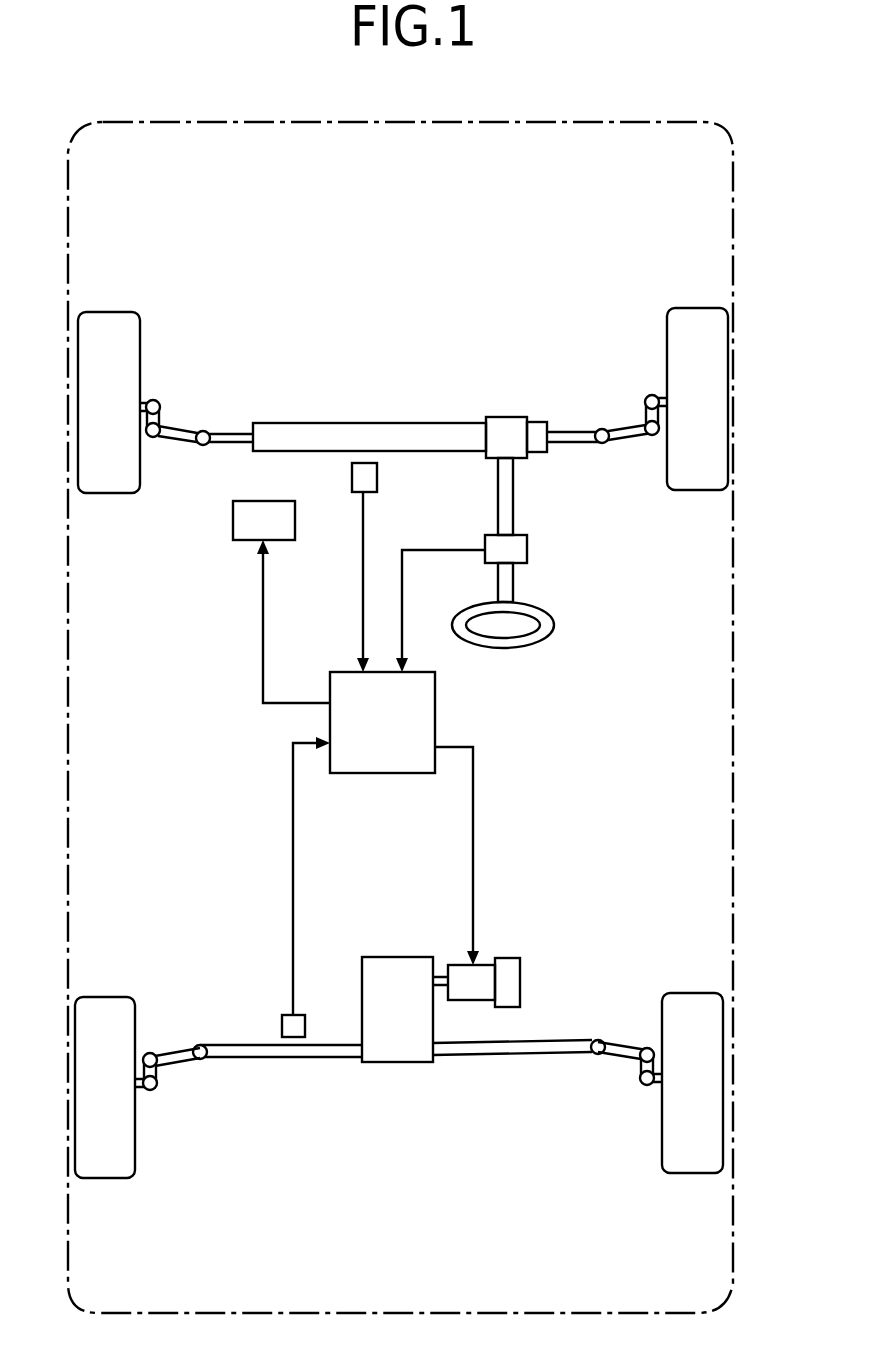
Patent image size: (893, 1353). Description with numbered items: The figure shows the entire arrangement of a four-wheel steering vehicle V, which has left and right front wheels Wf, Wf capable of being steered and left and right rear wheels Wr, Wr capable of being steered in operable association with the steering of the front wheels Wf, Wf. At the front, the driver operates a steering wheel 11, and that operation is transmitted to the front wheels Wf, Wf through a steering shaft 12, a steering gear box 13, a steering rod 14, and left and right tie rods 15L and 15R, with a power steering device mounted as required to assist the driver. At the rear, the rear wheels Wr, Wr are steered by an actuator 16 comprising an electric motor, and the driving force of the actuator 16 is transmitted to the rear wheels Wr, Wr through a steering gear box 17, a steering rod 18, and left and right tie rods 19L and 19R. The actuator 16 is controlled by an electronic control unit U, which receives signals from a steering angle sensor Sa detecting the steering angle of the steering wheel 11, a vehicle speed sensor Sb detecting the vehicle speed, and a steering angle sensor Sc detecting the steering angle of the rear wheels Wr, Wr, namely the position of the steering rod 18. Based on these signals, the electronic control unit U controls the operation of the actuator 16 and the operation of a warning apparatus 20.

The four-wheel steering vehicle V is at (742, 262).
The front wheels Wf is at (116, 322).
The rear wheels Wr is at (113, 1160).
The steering wheel 11 is at (555, 618).
The steering shaft 12 is at (515, 500).
The steering gear box 13 is at (505, 425).
The steering rod 14 is at (350, 433).
The left tie rod 15L is at (181, 430).
The right tie rod 15R is at (620, 425).
The actuator 16 is at (472, 992).
The steering gear box 17 is at (393, 1053).
The steering rod 18 is at (505, 1047).
The left tie rod 19L is at (178, 1046).
The right tie rod 19R is at (623, 1040).
The warning apparatus 20 is at (232, 519).
The electronic control unit U is at (340, 720).
The steering angle sensor Sa is at (518, 553).
The vehicle speed sensor Sb is at (372, 478).
The steering angle sensor Sc is at (282, 1022).